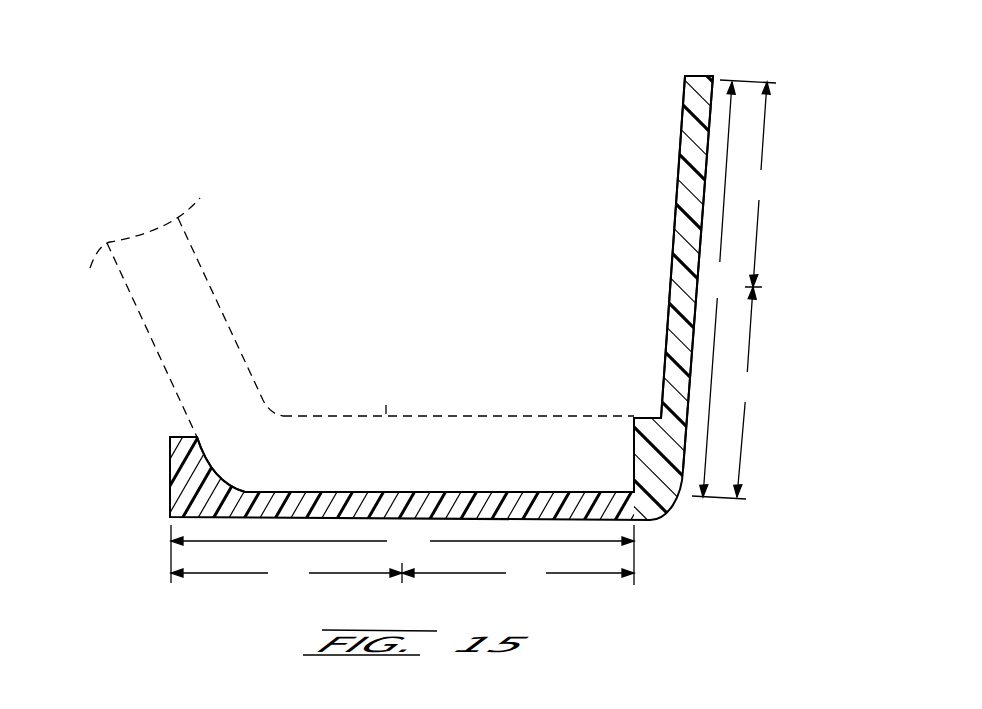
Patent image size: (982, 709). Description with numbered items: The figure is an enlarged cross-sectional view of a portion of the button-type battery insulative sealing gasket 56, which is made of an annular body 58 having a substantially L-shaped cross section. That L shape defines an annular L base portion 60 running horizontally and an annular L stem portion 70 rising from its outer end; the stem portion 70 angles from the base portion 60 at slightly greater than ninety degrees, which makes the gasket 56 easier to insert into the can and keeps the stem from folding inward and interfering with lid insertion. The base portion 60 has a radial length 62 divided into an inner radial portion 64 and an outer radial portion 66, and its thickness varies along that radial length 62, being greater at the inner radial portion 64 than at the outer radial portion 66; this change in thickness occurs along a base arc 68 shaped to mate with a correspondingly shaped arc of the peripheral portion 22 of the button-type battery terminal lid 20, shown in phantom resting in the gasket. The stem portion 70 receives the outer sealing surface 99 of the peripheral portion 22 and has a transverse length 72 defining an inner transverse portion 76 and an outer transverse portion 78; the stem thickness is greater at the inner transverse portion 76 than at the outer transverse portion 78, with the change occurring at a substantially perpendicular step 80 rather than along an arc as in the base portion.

The button-type battery insulative sealing gasket 56 is at (303, 130).
The button-type battery terminal lid 20 is at (245, 345).
The peripheral portion 22 is at (385, 440).
The outer sealing portion or surface 99 is at (420, 415).
The base arc 68 is at (222, 465).
The L base portion 60 is at (478, 492).
The substantially perpendicular step 80 is at (649, 415).
The L stem portion 70 is at (680, 299).
The annular body 58 is at (697, 345).
The transverse length 72 is at (734, 289).
The outer transverse portion 78 is at (761, 184).
The inner transverse portion 76 is at (747, 392).
The radial length 62 is at (402, 555).
The inner radial portion 64 is at (286, 572).
The outer radial portion 66 is at (518, 575).